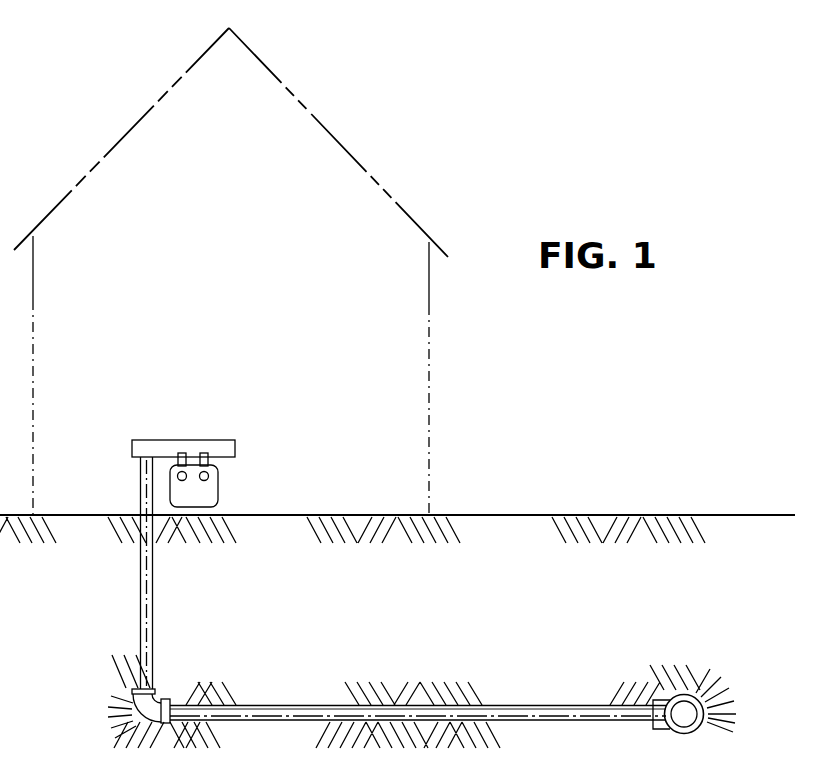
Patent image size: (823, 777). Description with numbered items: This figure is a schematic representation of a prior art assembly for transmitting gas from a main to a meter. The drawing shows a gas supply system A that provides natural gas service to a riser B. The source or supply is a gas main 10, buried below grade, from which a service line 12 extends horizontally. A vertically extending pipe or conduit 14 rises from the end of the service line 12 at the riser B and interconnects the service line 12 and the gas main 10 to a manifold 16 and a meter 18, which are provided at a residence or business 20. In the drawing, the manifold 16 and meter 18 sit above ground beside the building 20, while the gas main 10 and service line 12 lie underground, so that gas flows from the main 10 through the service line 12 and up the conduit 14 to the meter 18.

The gas main 10 is at (667, 698).
The service line 12 is at (305, 699).
The vertically extending pipe or conduit 14 is at (159, 618).
The manifold 16 is at (217, 435).
The meter 18 is at (201, 497).
The residence or business 20 is at (430, 375).
The gas supply system A is at (707, 654).
The riser B is at (116, 635).